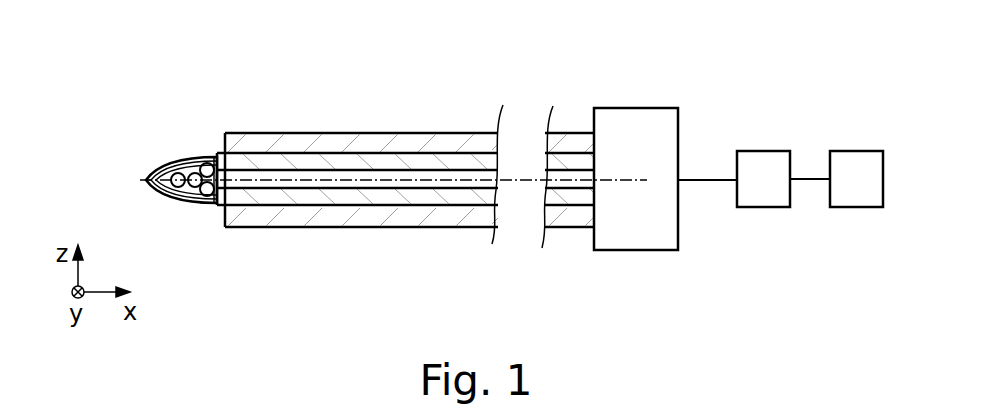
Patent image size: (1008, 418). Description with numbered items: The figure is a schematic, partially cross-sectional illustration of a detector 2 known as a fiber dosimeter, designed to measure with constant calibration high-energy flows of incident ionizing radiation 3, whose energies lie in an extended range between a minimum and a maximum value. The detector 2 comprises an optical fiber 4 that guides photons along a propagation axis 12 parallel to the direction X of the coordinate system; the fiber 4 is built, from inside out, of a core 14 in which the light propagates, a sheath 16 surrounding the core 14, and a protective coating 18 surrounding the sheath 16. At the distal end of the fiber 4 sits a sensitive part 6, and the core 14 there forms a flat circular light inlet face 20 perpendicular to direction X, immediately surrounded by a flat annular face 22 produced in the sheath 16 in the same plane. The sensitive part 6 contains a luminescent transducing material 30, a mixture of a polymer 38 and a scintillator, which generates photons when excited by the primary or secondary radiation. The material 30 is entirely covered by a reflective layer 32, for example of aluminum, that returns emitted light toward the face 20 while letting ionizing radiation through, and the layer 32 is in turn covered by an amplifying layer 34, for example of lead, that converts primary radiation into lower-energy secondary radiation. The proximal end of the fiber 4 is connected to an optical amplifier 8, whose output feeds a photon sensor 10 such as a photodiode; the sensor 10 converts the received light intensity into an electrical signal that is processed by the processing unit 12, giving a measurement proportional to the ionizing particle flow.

The detector 2 is at (170, 303).
The incident ionizing radiation 3 is at (183, 222).
The optical fiber 4 is at (187, 36).
The sensitive part 6 is at (92, 36).
The optical amplifier 8 is at (638, 108).
The photon sensor 10 is at (765, 150).
The processing unit 12 is at (857, 150).
The core 14 is at (292, 172).
The sheath 16 is at (347, 160).
The protective coating 18 is at (398, 147).
The light inlet face 20 is at (218, 158).
The annular face 22 is at (208, 212).
The transducing material 30 is at (93, 75).
The reflective layer 32 is at (158, 194).
The amplifying layer 34 is at (150, 181).
The polymer 38 is at (158, 166).